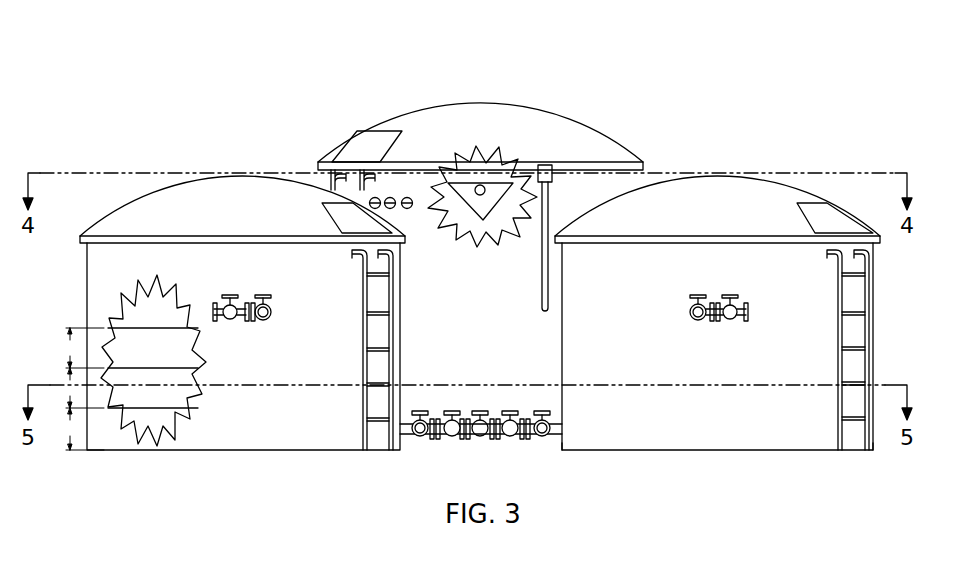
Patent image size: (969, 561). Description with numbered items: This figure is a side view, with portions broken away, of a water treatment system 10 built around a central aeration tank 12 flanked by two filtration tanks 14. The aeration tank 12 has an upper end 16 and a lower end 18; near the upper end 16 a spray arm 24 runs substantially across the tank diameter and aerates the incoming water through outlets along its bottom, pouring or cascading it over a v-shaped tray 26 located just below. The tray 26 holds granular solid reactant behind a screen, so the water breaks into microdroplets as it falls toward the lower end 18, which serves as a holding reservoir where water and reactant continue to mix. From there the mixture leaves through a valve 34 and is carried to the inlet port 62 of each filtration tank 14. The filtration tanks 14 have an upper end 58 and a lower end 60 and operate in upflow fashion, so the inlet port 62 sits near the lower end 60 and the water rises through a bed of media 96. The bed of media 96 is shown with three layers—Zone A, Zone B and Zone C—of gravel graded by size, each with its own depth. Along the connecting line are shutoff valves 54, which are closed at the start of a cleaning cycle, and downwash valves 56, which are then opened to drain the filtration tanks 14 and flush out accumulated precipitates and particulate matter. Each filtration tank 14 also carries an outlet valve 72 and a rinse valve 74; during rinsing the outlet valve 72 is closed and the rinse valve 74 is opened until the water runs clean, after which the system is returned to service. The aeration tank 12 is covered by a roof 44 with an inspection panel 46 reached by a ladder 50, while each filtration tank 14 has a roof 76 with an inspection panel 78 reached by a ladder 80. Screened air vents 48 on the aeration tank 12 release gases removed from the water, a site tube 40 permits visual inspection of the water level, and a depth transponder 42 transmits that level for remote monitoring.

The water treatment system 10 is at (654, 70).
The aeration tank 12 is at (446, 87).
The filtration tank 14 is at (194, 160).
The upper end 16 is at (646, 172).
The lower end 18 is at (554, 452).
The spray arm 24 is at (480, 185).
The v-shaped tray 26 is at (497, 237).
The valve 34 is at (480, 440).
The site tube 40 is at (541, 290).
The depth transponder 42 is at (545, 165).
The roof 44 is at (533, 106).
The inspection panel 46 is at (360, 142).
The screened air vents 48 is at (408, 209).
The ladder 50 is at (367, 182).
The shutoff valves 54 is at (452, 440).
The downwash valves 56 is at (420, 440).
The upper end 58 is at (874, 250).
The lower end 60 is at (871, 450).
The inlet port 62 is at (408, 415).
The outlet valves 72 is at (263, 322).
The rinse valves 74 is at (230, 322).
The roof 76 is at (131, 208).
The inspection panel 78 is at (333, 217).
The ladder 80 is at (396, 330).
The bed of media 96 is at (216, 378).